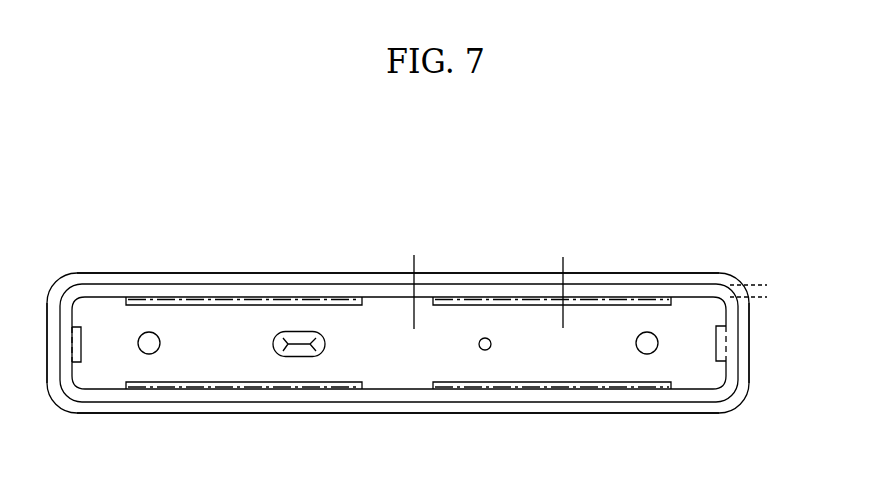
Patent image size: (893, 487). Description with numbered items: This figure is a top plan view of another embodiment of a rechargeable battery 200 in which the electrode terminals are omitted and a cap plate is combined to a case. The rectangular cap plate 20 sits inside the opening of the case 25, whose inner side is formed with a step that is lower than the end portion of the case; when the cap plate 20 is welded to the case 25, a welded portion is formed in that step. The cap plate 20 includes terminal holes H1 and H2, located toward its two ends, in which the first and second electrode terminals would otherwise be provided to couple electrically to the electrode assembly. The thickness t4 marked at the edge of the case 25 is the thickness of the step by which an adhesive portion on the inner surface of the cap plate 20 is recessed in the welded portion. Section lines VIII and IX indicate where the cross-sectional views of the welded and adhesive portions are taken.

The rechargeable battery 200 is at (451, 154).
The cap plate 20 is at (710, 277).
The case 25 is at (736, 270).
The terminal hole H1 is at (150, 354).
The terminal hole H2 is at (648, 354).
The thickness of the step t4 is at (768, 267).
The line VIII- VIII is at (406, 325).
The line IX- IX is at (555, 326).